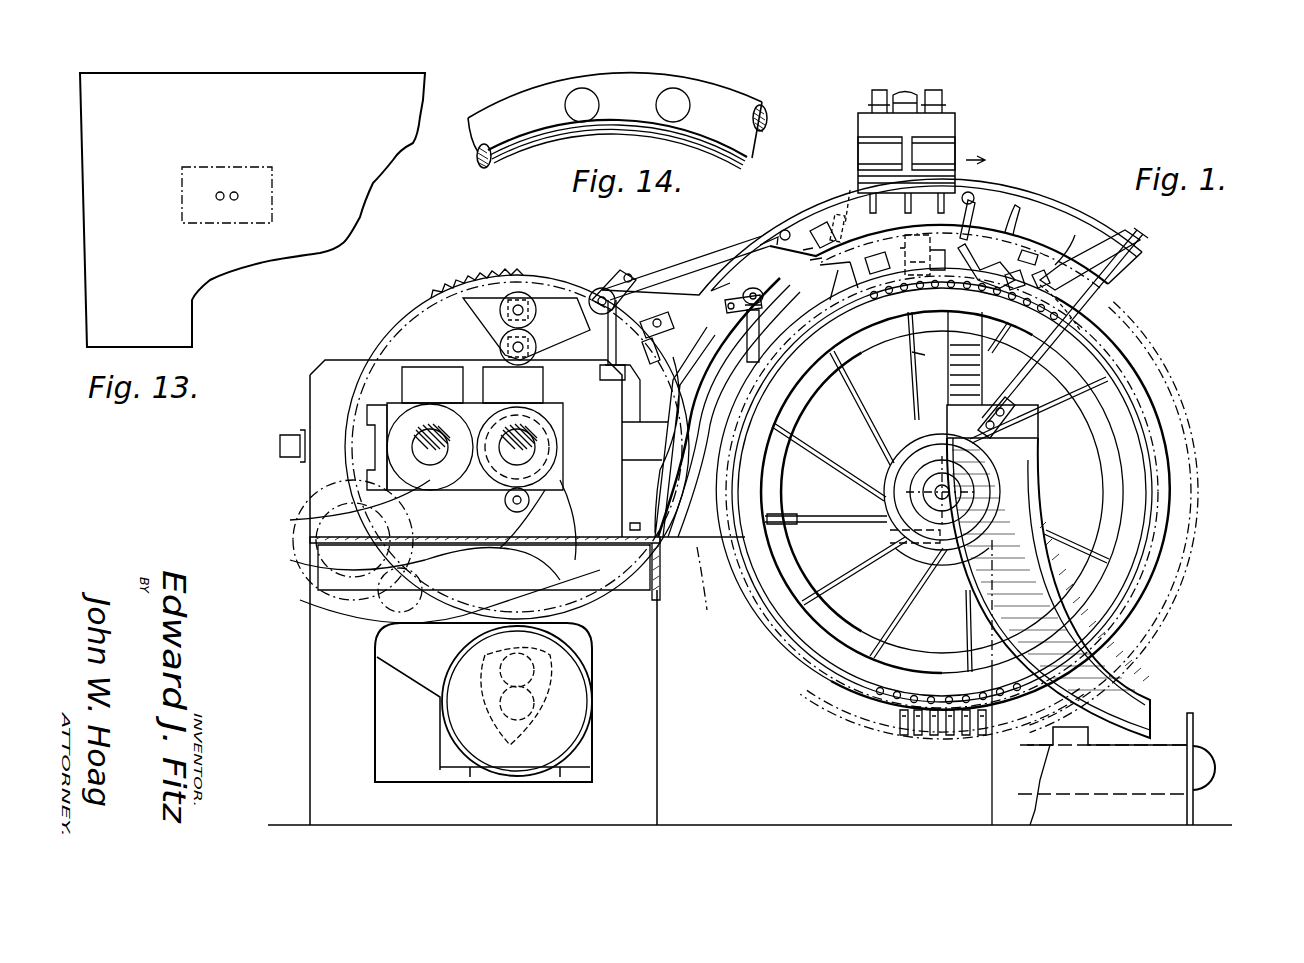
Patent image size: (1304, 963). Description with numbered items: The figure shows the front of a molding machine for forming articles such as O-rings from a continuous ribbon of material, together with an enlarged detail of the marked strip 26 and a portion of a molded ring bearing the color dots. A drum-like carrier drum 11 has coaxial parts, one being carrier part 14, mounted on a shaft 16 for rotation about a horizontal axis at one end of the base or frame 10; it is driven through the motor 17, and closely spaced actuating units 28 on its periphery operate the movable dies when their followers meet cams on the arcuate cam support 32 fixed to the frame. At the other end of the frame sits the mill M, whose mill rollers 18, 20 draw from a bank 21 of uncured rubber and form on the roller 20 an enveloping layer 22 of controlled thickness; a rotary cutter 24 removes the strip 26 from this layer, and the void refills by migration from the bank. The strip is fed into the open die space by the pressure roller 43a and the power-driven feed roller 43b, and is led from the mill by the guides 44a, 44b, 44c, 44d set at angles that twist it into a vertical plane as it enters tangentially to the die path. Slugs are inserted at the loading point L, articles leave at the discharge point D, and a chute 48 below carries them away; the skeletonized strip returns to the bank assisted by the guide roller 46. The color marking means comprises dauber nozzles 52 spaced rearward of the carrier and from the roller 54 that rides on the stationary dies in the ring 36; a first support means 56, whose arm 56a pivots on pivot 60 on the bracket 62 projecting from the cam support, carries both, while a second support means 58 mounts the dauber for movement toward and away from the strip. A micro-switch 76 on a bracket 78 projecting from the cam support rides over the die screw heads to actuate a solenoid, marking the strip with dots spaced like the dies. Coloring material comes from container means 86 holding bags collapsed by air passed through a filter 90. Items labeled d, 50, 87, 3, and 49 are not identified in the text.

In FIG. 13, the strip 26 is at (320, 82).
In FIG. 1, the strip 26 is at (718, 262).
In FIG. 13, the dauber means nozzles 52 is at (182, 195).
In FIG. 13, the holes in strip d is at (236, 190).
In FIG. 14, the holes in strip d is at (667, 90).
In FIG. 14, the curved guide strip segment 50 is at (725, 96).
In FIG. 1, the filter 90 is at (905, 92).
In FIG. 1, the solenoid terminals 87 is at (955, 115).
In FIG. 1, the container means 86 is at (872, 152).
In FIG. 1, the micro-switch 76 is at (822, 222).
In FIG. 1, the arcuate cam support 32 is at (825, 238).
In FIG. 1, the guide 44c is at (775, 238).
In FIG. 1, the pressure roller 43a is at (535, 298).
In FIG. 1, the guide 44b is at (600, 288).
In FIG. 1, the guide 44a is at (656, 318).
In FIG. 1, the guide 44d is at (990, 210).
In FIG. 1, the arm 56a is at (1005, 230).
In FIG. 1, the arm or bracket 62 is at (1022, 274).
In FIG. 1, the carrier drum 11 is at (1188, 512).
In FIG. 1, the first support means 56 is at (1050, 260).
In FIG. 1, the discharge point D is at (1125, 230).
In FIG. 1, the section line 3 is at (945, 160).
In FIG. 1, the bank of moldable material 21 is at (463, 400).
In FIG. 1, the mill roller 18 is at (418, 430).
In FIG. 1, the feed roller 43b is at (520, 410).
In FIG. 1, the guide roller 46 is at (660, 355).
In FIG. 1, the mill M is at (395, 469).
In FIG. 1, the mill roller 20 is at (545, 475).
In FIG. 1, the enveloping layer 22 is at (470, 500).
In FIG. 1, the rotary cutter 24 is at (545, 500).
In FIG. 1, the base or frame 10 is at (687, 552).
In FIG. 1, the bracket 78 is at (752, 295).
In FIG. 1, the second support means 58 is at (868, 300).
In FIG. 1, the roller 54 is at (910, 290).
In FIG. 1, the pivot 60 is at (1008, 285).
In FIG. 1, the loading point L is at (893, 365).
In FIG. 1, the ring 36 is at (752, 481).
In FIG. 1, the shaft 16 is at (951, 495).
In FIG. 1, the chute 48 is at (1010, 493).
In FIG. 1, the carrier part 14 is at (812, 702).
In FIG. 1, the actuating units 28 is at (925, 745).
In FIG. 1, the bracket 49 is at (1172, 745).
In FIG. 1, the motor 17 is at (570, 740).